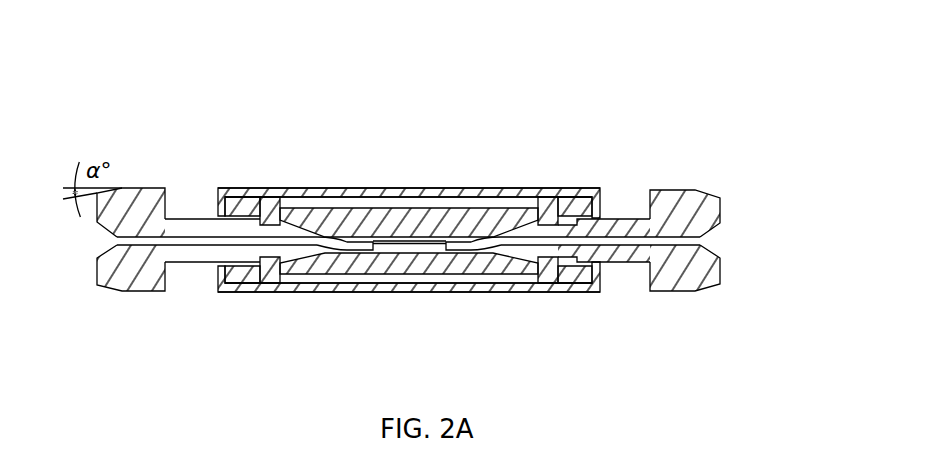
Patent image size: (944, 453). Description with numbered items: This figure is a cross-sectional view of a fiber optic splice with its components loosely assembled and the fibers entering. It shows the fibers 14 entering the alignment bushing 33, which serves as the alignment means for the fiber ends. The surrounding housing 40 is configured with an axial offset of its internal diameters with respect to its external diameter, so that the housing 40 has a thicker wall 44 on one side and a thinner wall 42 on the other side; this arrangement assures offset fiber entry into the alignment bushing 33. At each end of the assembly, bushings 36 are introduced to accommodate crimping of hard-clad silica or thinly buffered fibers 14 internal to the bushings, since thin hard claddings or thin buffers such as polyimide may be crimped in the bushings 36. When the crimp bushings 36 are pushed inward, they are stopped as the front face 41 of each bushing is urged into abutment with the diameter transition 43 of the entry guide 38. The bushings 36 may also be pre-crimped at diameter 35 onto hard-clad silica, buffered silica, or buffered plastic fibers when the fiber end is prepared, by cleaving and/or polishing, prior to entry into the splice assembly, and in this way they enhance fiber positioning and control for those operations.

The fibers 14 is at (571, 225).
The alignment bushing 33 is at (380, 205).
The diameter 35 is at (193, 217).
The bushings 36 is at (137, 186).
The entry guide 38 is at (234, 196).
The housing 40 is at (341, 186).
The front face 41 is at (241, 253).
The thinner wall 42 is at (385, 291).
The diameter transition 43 is at (261, 206).
The thicker wall 44 is at (407, 187).